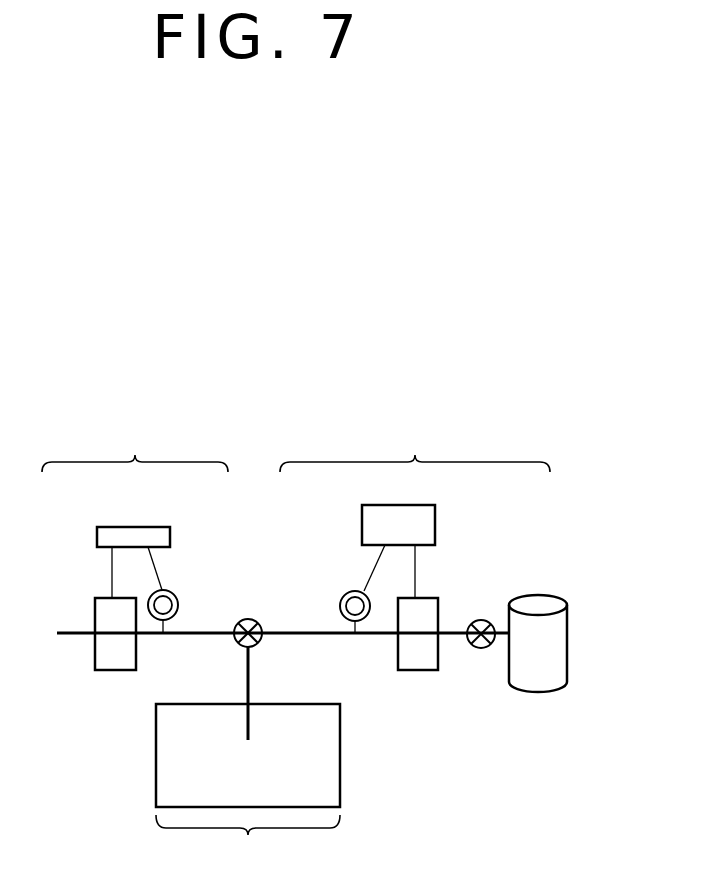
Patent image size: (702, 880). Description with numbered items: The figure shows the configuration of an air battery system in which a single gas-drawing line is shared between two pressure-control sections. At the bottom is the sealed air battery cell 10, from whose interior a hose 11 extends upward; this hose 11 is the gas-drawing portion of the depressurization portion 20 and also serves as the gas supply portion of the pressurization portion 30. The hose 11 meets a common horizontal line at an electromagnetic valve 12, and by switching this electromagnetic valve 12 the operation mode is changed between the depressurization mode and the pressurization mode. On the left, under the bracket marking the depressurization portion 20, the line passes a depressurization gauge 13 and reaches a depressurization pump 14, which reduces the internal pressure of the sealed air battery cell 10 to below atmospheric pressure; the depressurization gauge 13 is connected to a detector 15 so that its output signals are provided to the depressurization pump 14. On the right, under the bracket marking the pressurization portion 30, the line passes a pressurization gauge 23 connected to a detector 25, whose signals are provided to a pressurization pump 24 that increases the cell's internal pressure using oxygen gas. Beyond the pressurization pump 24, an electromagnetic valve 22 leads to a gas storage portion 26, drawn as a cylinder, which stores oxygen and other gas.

The sealed air battery cell 10 is at (248, 785).
The hose (gas-drawing portion) 11 is at (246, 690).
The electromagnetic valve 12 is at (250, 621).
The depressurization gauge 13 is at (175, 603).
The depressurization pump 14 is at (118, 660).
The detector 15 is at (103, 538).
The depressurization portion 20 is at (135, 448).
The electromagnetic valve 22 is at (483, 648).
The pressurization gauge 23 is at (341, 607).
The pressurization pump 24 is at (420, 663).
The detector 25 is at (432, 523).
The gas storage portion 26 is at (556, 636).
The pressurization portion 30 is at (415, 448).